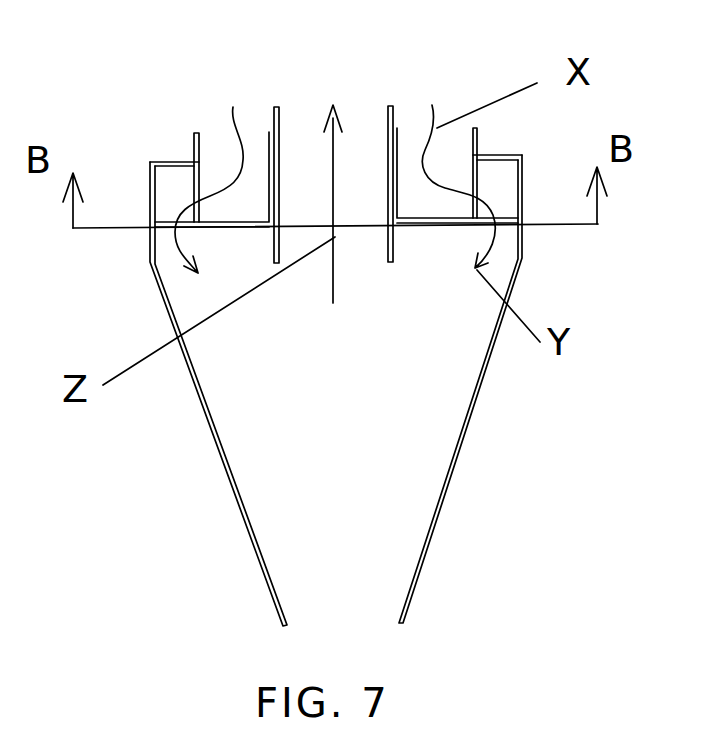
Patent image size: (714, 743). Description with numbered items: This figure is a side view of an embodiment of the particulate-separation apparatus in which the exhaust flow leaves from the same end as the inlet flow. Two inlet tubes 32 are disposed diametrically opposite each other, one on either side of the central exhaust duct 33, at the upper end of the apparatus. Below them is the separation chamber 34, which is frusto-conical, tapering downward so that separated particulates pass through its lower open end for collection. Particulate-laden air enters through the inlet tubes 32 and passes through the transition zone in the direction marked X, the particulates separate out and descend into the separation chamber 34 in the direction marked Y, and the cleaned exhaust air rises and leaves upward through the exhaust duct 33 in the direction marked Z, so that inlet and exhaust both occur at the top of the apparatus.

The inlet tube 32 is at (220, 153).
The exhaust duct 33 is at (396, 113).
The separation chamber 34 is at (458, 457).